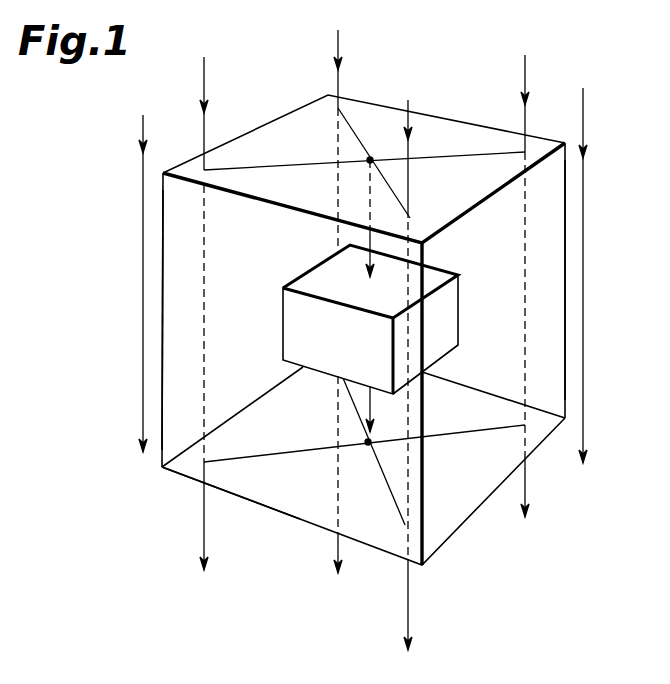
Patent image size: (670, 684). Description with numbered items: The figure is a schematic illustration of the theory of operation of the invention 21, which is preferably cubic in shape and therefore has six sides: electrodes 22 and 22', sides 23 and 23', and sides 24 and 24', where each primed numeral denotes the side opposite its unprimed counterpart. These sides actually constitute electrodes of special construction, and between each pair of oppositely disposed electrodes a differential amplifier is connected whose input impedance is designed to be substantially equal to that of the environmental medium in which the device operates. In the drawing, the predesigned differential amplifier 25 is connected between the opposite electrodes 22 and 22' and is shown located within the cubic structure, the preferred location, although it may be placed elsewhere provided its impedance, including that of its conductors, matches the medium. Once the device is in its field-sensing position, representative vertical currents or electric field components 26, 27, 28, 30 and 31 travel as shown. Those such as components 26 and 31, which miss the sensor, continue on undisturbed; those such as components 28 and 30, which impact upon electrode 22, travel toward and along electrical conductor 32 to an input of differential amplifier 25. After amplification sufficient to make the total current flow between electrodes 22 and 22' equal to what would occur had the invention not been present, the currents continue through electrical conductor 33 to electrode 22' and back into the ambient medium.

The invention 21 is at (412, 75).
The electrode 22 is at (364, 159).
The electrode 22' is at (364, 470).
The side 23 is at (211, 320).
The side 23' is at (520, 280).
The side 24 is at (389, 364).
The side 24' is at (206, 493).
The differential amplifier 25 is at (322, 265).
The electric field component 26 is at (145, 135).
The electric field component 27 is at (205, 82).
The electric field component 28 is at (355, 43).
The electric field component 30 is at (527, 74).
The electric field component 31 is at (586, 116).
The electrical conductor 32 is at (383, 247).
The electrical conductor 33 is at (368, 402).